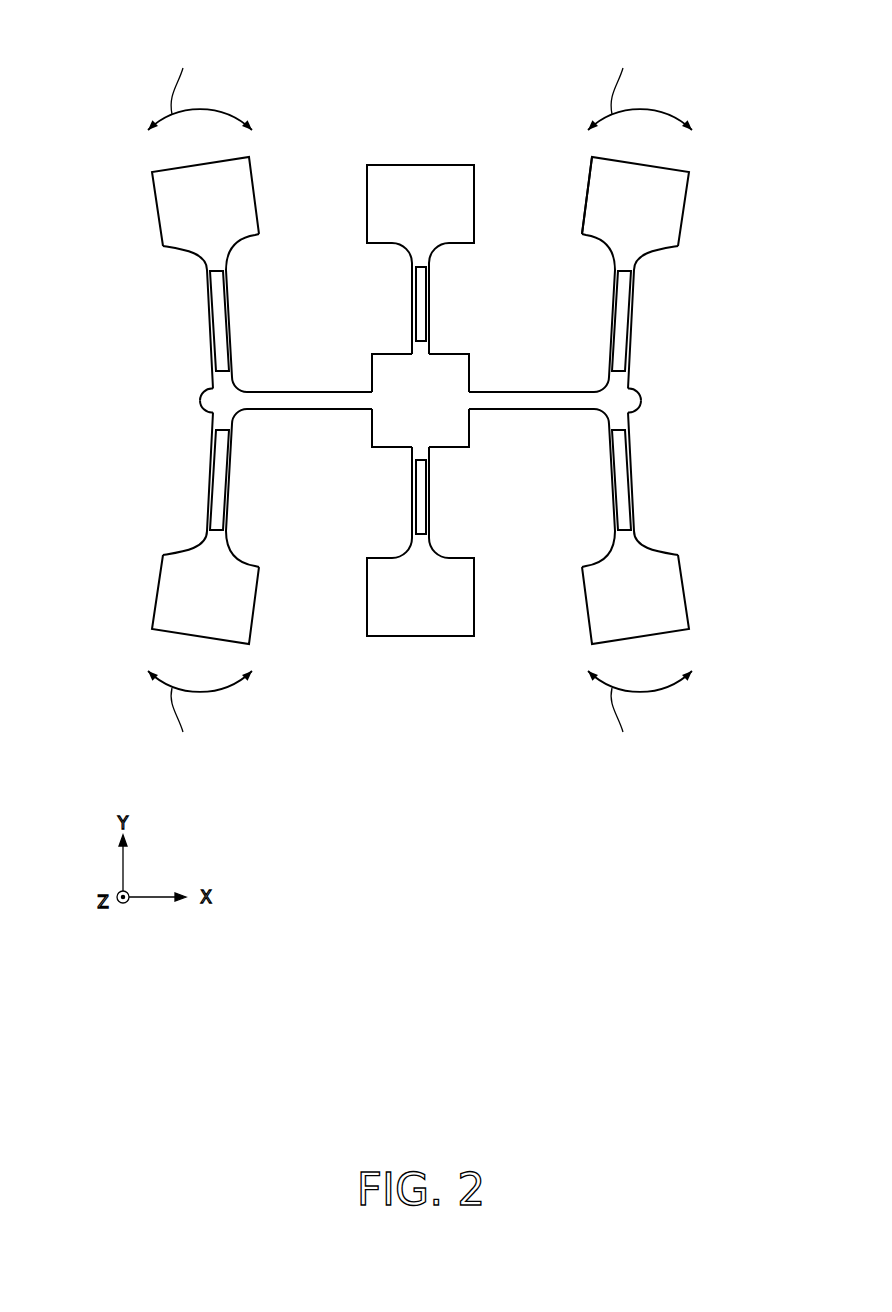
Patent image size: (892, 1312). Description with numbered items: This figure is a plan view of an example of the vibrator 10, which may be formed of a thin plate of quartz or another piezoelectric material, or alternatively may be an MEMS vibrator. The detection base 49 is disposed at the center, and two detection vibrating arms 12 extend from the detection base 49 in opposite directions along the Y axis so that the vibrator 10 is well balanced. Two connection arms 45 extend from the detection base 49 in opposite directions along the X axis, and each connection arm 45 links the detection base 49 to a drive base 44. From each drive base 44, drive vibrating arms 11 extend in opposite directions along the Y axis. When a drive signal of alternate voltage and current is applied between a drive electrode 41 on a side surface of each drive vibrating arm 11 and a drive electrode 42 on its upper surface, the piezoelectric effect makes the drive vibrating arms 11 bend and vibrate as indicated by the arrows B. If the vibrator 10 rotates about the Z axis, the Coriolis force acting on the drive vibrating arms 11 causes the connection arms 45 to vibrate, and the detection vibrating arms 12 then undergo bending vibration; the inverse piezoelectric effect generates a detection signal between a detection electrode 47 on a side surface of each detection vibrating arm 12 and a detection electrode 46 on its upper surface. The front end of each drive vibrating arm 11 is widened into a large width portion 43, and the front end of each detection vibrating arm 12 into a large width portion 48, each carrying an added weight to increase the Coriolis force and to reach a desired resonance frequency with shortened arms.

The vibrator 10 is at (727, 56).
The drive vibrating arm 11 is at (240, 178).
The detection vibrating arm 12 is at (448, 172).
The drive electrode 41 is at (633, 342).
The drive electrode 42 is at (636, 302).
The large width portion 43 is at (592, 190).
The drive base 44 is at (641, 402).
The connection arm 45 is at (526, 403).
The detection electrode 46 is at (422, 308).
The detection electrode 47 is at (410, 300).
The large width portion 48 is at (393, 172).
The detection base 49 is at (388, 378).